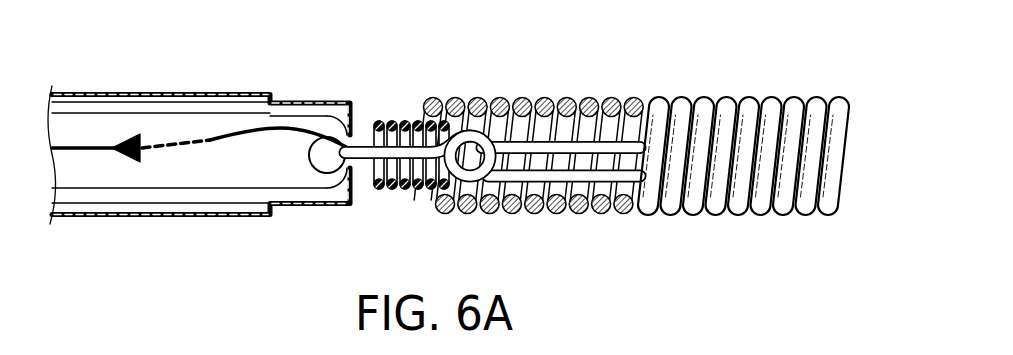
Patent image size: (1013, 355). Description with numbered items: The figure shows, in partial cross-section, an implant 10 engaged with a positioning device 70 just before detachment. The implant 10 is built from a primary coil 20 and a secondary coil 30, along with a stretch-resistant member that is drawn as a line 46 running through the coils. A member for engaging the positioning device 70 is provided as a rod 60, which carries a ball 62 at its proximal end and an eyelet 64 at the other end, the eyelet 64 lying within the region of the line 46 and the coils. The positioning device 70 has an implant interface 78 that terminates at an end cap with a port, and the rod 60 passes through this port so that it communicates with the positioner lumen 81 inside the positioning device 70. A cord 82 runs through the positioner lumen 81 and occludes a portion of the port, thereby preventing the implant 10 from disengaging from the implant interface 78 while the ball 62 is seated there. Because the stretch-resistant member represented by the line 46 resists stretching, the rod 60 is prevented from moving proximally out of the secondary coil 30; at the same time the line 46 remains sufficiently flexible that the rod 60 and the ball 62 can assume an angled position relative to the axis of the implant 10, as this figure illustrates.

The implant 10 is at (567, 235).
The primary coil 20 is at (735, 217).
The secondary coil 30 is at (373, 188).
The line 46 is at (596, 150).
The rod 60 is at (406, 121).
The ball 62 is at (326, 163).
The eyelet 64 is at (488, 133).
The positioning device 70 is at (105, 81).
The implant interface 78 is at (351, 138).
The positioner lumen 81 is at (162, 174).
The cord 82 is at (253, 128).